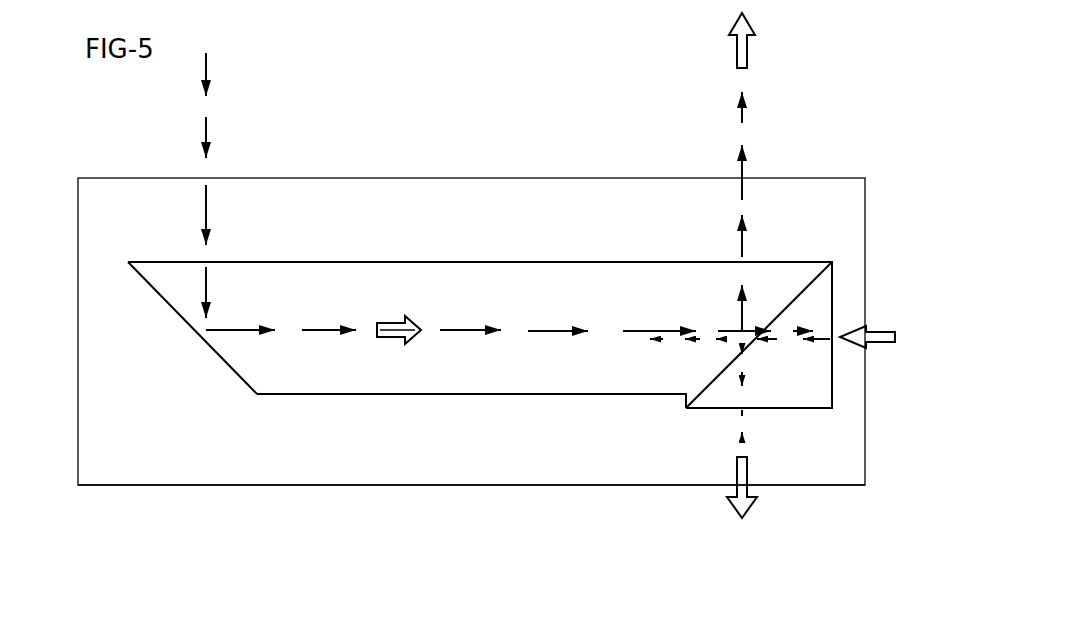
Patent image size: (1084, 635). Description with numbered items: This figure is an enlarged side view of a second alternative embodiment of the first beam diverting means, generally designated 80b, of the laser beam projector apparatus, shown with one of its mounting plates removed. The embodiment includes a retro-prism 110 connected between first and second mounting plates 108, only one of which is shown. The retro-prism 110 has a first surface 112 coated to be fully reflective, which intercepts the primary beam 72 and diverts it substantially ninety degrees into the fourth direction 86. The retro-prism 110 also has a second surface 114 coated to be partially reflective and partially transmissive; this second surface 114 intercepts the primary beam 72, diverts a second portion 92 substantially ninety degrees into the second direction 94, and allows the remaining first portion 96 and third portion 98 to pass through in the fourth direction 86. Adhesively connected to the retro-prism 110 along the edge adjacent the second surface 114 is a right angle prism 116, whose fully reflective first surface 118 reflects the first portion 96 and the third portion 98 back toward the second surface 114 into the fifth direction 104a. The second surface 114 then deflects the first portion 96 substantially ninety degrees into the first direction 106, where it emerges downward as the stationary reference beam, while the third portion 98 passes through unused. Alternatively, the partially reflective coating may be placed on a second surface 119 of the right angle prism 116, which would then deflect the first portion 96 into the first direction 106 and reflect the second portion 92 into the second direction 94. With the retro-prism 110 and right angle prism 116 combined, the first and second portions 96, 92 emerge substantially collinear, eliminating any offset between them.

The primary beam 72 is at (207, 137).
The second alternative embodiment of the first diverting means 80b is at (480, 500).
The fourth direction 86 is at (392, 324).
The second portion 92 is at (745, 112).
The second direction 94 is at (749, 50).
The first portion 96 is at (781, 341).
The third portion 98 is at (661, 341).
The fifth direction 104a is at (880, 330).
The first direction 106 is at (736, 470).
The mounting plate 108 is at (557, 487).
The retro-prism 110 is at (388, 374).
The first surface 112 is at (231, 363).
The second surface 114 is at (777, 294).
The right angle prism 116 is at (822, 283).
The first surface 118 is at (823, 398).
The second surface 119 is at (818, 270).